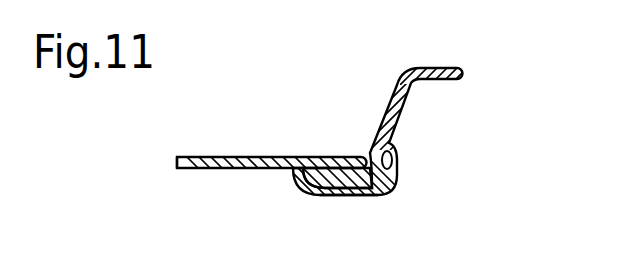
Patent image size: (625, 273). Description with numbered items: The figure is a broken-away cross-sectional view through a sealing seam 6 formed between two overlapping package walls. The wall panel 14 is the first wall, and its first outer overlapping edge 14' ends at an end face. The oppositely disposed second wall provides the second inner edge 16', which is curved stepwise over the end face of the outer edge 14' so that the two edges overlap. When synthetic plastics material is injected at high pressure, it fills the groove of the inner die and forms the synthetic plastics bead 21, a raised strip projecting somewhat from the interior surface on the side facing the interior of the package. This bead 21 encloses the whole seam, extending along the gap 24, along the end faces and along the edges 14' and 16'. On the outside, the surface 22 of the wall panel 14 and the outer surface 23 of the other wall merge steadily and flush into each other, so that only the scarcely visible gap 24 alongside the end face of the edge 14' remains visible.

The wall panel 14 is at (140, 146).
The surface 22 is at (238, 157).
The sealing seam 6 is at (300, 132).
The first outer overlapping edge 14' is at (341, 133).
The gap 24 is at (368, 142).
The outer surface 23 is at (435, 67).
The second inner edge 16' is at (366, 147).
The synthetic plastics bead 21 is at (345, 198).